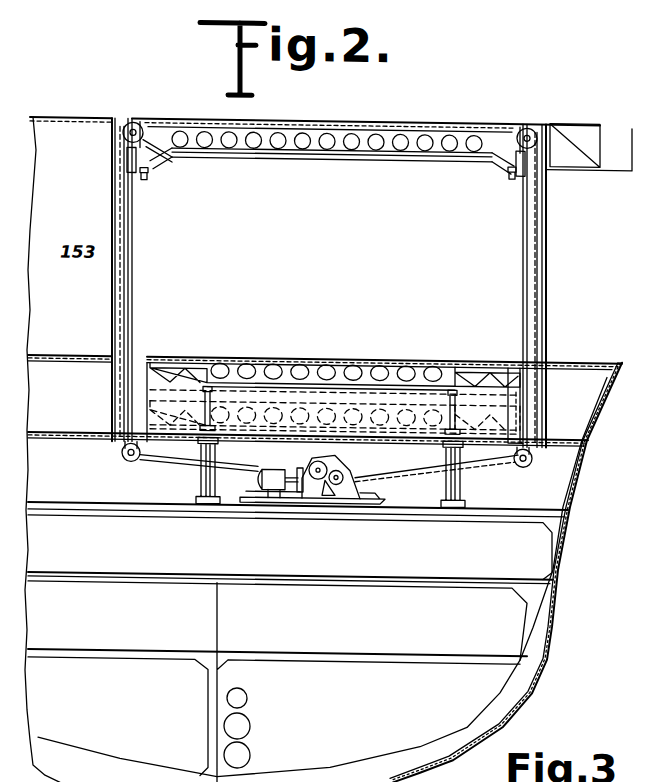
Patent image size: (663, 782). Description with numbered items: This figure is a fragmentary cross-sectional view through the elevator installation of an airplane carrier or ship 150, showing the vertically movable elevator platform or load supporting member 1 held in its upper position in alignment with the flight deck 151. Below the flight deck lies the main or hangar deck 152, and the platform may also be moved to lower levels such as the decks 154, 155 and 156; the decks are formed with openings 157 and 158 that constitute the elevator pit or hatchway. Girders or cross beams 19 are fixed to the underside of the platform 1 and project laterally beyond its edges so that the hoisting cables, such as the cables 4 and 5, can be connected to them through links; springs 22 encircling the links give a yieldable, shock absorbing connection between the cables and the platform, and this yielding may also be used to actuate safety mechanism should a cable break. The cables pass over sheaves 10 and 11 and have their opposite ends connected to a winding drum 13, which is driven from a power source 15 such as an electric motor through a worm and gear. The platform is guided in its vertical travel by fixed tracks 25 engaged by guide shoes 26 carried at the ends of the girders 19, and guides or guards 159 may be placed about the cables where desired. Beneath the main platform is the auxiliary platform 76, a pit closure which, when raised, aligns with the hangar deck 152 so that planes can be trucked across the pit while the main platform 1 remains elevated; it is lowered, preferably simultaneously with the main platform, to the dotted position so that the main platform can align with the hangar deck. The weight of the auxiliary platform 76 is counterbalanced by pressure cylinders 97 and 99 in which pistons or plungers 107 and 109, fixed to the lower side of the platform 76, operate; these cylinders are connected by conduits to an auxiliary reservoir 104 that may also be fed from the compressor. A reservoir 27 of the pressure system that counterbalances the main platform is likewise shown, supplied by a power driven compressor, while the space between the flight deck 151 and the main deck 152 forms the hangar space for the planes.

The elevator platform 1 is at (330, 135).
The cable 4 is at (128, 239).
The cable 5 is at (530, 206).
The sheave 10 is at (140, 121).
The sheave 11 is at (131, 461).
The winding drum 13 is at (360, 480).
The power source 15 is at (262, 477).
The girders or cross beams 19 is at (337, 146).
The springs 22 is at (150, 174).
The fixed tracks 25 is at (128, 294).
The guide shoes 26 is at (128, 168).
The reservoir 27 is at (250, 751).
The auxiliary platform 76 is at (300, 360).
The cylinder 97 is at (200, 486).
The cylinder 99 is at (460, 490).
The auxiliary reservoir 104 is at (247, 694).
The piston or plunger 107 is at (210, 397).
The piston or plunger 109 is at (525, 388).
The airplane carrier or ship 150 is at (560, 602).
The flight deck 151 is at (80, 117).
The main deck 152 is at (50, 355).
The deck 154 is at (52, 432).
The deck 155 is at (48, 502).
The deck 156 is at (50, 572).
The opening 157 is at (150, 121).
The opening 158 is at (152, 356).
The guides or guards 159 is at (128, 268).